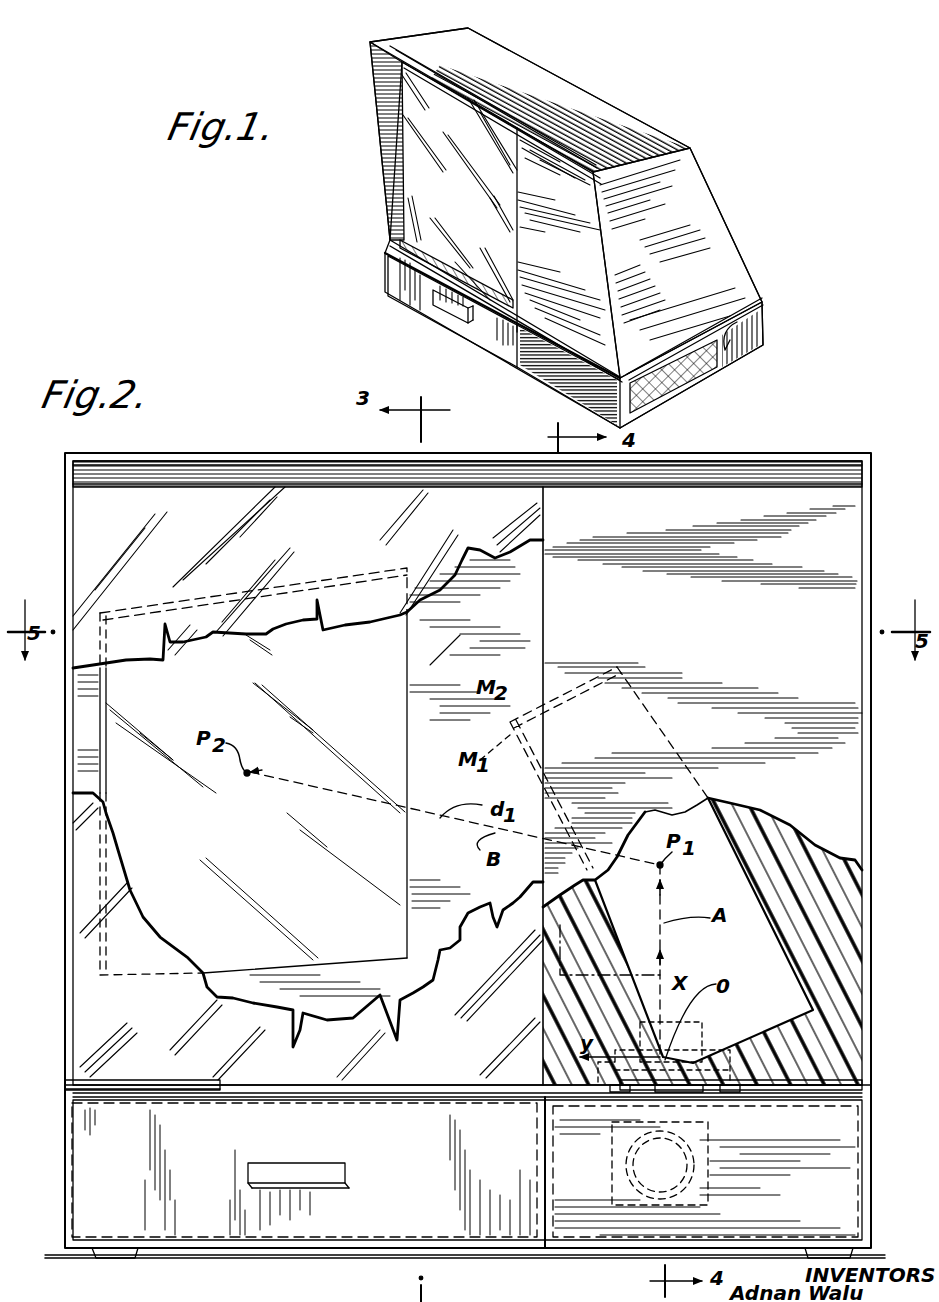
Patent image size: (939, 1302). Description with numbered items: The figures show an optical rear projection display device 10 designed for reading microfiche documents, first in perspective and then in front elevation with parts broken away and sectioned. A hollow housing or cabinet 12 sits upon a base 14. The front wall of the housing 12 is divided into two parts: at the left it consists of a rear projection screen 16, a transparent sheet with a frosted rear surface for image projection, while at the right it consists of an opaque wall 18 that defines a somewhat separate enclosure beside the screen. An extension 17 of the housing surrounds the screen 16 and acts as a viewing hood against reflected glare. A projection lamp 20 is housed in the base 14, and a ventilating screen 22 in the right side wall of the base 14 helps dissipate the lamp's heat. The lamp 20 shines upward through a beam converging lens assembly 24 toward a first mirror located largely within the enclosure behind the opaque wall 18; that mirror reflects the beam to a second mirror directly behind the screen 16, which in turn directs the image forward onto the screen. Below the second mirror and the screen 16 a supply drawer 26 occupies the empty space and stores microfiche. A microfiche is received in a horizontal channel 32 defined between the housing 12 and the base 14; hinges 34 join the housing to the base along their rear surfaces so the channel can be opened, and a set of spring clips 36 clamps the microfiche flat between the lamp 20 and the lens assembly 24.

In FIG. 1, the optical rear projection display device 10 is at (370, 156).
In FIG. 1, the housing 12 is at (593, 110).
In FIG. 2, the housing 12 is at (65, 518).
In FIG. 1, the base 14 is at (750, 343).
In FIG. 2, the base 14 is at (65, 1212).
In FIG. 1, the rear projection screen 16 is at (418, 197).
In FIG. 2, the rear projection screen 16 is at (468, 592).
In FIG. 1, the extension 17 is at (388, 80).
In FIG. 2, the extension 17 is at (247, 472).
In FIG. 1, the opaque wall 18 is at (557, 320).
In FIG. 2, the opaque wall 18 is at (828, 545).
In FIG. 2, the projection lamp 20 is at (720, 1200).
In FIG. 1, the ventilating screen 22 is at (672, 383).
In FIG. 2, the ventilating screen 22 is at (868, 1172).
In FIG. 2, the beam converging lens assembly 24 is at (700, 1048).
In FIG. 1, the supply drawer 26 is at (402, 300).
In FIG. 2, the supply drawer 26 is at (230, 1215).
In FIG. 1, the horizontal channel 32 is at (593, 360).
In FIG. 2, the horizontal channel 32 is at (500, 1097).
In FIG. 1, the hinges 34 is at (763, 315).
In FIG. 2, the hinges 34 is at (170, 1097).
In FIG. 2, the spring clips 36 is at (615, 1103).